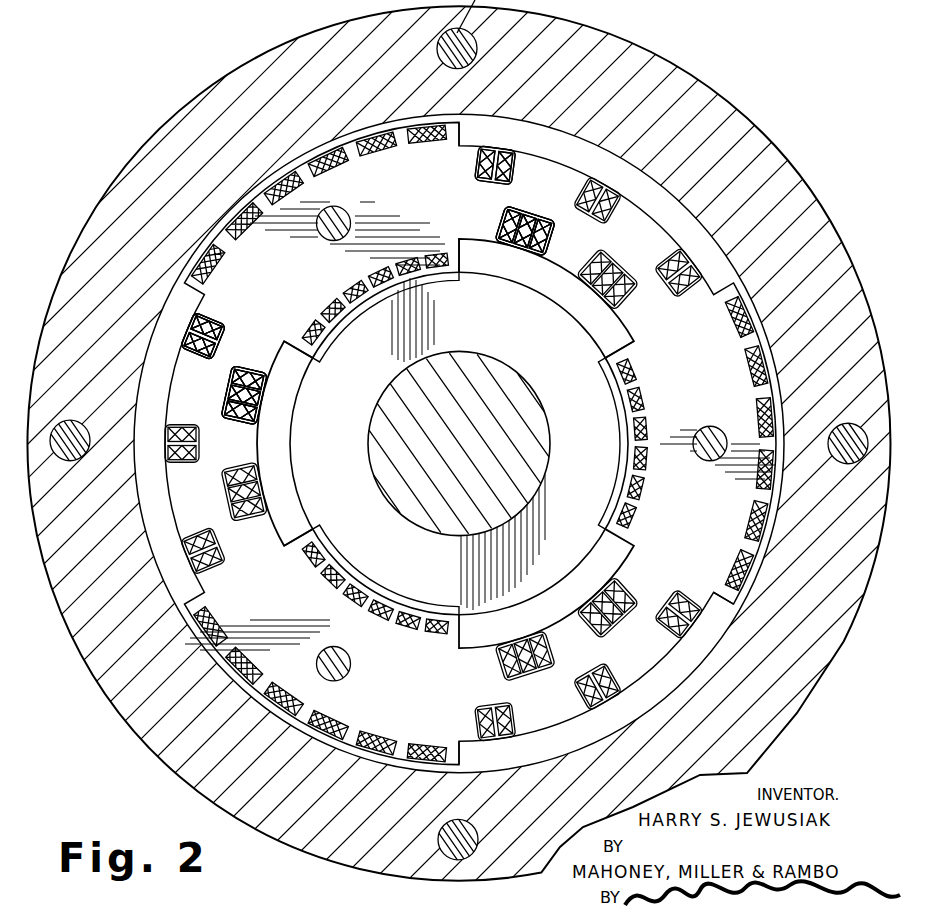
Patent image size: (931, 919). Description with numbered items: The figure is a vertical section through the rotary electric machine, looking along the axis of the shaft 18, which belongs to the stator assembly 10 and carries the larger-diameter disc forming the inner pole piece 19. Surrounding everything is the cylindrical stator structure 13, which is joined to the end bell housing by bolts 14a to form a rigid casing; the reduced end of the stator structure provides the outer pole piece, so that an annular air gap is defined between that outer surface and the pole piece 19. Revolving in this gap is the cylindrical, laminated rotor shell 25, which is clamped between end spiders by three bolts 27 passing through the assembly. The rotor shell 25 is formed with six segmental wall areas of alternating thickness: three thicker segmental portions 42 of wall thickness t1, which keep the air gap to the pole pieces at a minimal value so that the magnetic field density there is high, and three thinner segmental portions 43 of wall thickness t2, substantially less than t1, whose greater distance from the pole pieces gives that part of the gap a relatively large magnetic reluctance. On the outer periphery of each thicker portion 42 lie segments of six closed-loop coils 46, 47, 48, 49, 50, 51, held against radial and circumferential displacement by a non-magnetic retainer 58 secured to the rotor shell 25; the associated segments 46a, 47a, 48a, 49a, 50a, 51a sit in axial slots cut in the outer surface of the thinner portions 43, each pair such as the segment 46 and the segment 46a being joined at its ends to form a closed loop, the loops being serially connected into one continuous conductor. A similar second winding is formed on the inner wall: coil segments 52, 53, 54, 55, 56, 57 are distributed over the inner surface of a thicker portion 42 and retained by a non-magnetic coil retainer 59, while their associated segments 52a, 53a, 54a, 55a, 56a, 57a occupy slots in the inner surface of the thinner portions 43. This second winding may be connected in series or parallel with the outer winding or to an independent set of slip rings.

The stator assembly 10 is at (235, 78).
The stator structure 13 is at (150, 150).
The bolts 14a is at (88, 435).
The shaft 18 is at (548, 428).
The pole piece 19 is at (566, 376).
The rotor shell 25 is at (680, 228).
The bolts 27 is at (345, 219).
The thicker segmental portions 42 is at (350, 165).
The thinner segmental portions 43 is at (688, 165).
The coil segment 46 is at (213, 252).
The coil segment 47 is at (246, 224).
The coil segment 48 is at (288, 181).
The coil segment 49 is at (335, 157).
The coil segment 50 is at (373, 147).
The coil segment 51 is at (418, 137).
The coil segment 46a is at (203, 440).
The coil segment 47a is at (220, 342).
The coil segment 48a is at (218, 315).
The coil segment 49a is at (472, 174).
The coil segment 50a is at (512, 165).
The coil segment 51a is at (578, 192).
The coil segment 52 is at (307, 330).
The coil segment 53 is at (337, 305).
The coil segment 54 is at (353, 290).
The coil segment 55 is at (380, 263).
The coil segment 56 is at (413, 263).
The coil segment 57 is at (437, 252).
The coil segment 52a is at (265, 420).
The coil segment 53a is at (265, 402).
The coil segment 54a is at (265, 384).
The coil segment 55a is at (500, 215).
The coil segment 56a is at (520, 240).
The coil segment 57a is at (537, 242).
The retainer 58 is at (458, 126).
The coil retainer 59 is at (305, 355).
The wall thickness t1 is at (745, 545).
The wall thickness t2 is at (628, 330).